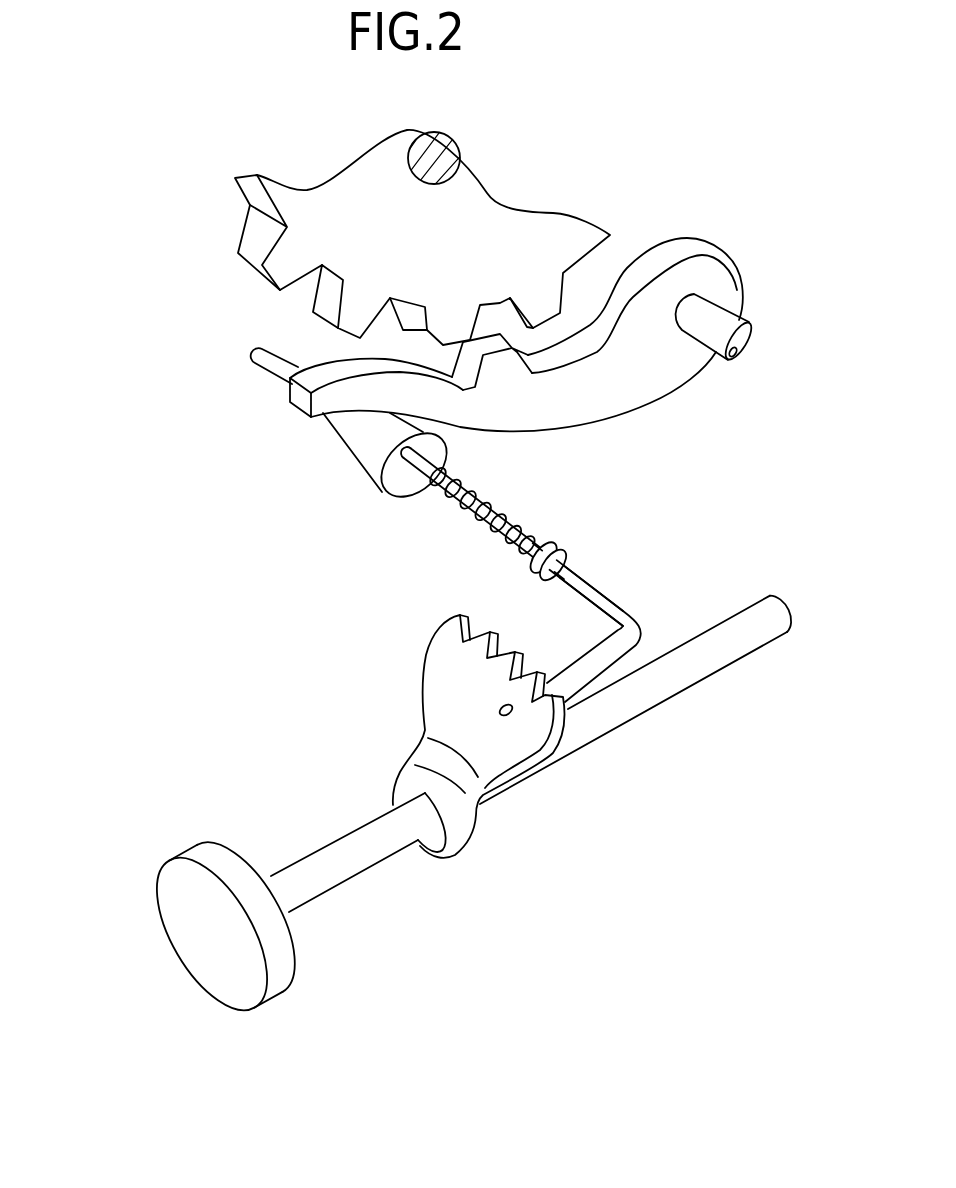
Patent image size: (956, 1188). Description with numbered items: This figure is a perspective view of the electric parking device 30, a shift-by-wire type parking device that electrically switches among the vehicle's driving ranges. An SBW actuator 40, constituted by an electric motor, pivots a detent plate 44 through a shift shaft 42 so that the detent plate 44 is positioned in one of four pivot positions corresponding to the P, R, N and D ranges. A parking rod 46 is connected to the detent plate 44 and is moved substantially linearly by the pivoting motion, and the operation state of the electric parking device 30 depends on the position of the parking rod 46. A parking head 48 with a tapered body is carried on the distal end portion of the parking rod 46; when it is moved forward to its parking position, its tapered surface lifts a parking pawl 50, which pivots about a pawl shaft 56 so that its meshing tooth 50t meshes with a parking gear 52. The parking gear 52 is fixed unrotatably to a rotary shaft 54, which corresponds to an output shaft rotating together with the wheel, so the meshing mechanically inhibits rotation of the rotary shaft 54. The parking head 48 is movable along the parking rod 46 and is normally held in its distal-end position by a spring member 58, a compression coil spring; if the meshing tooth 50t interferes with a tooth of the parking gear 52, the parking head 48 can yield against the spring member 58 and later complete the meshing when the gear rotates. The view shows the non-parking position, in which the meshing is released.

The electric parking device 30 is at (147, 350).
The SBW actuator 40 is at (205, 974).
The shift shaft 42 is at (613, 718).
The detent plate 44 is at (437, 665).
The parking rod 46 is at (594, 592).
The parking head 48 is at (372, 440).
The parking pawl 50 is at (650, 384).
The meshing tooth 50t is at (508, 372).
The parking gear 52 is at (510, 214).
The rotary shaft 54 is at (438, 150).
The pawl shaft 56 is at (723, 328).
The spring member 58 is at (473, 523).